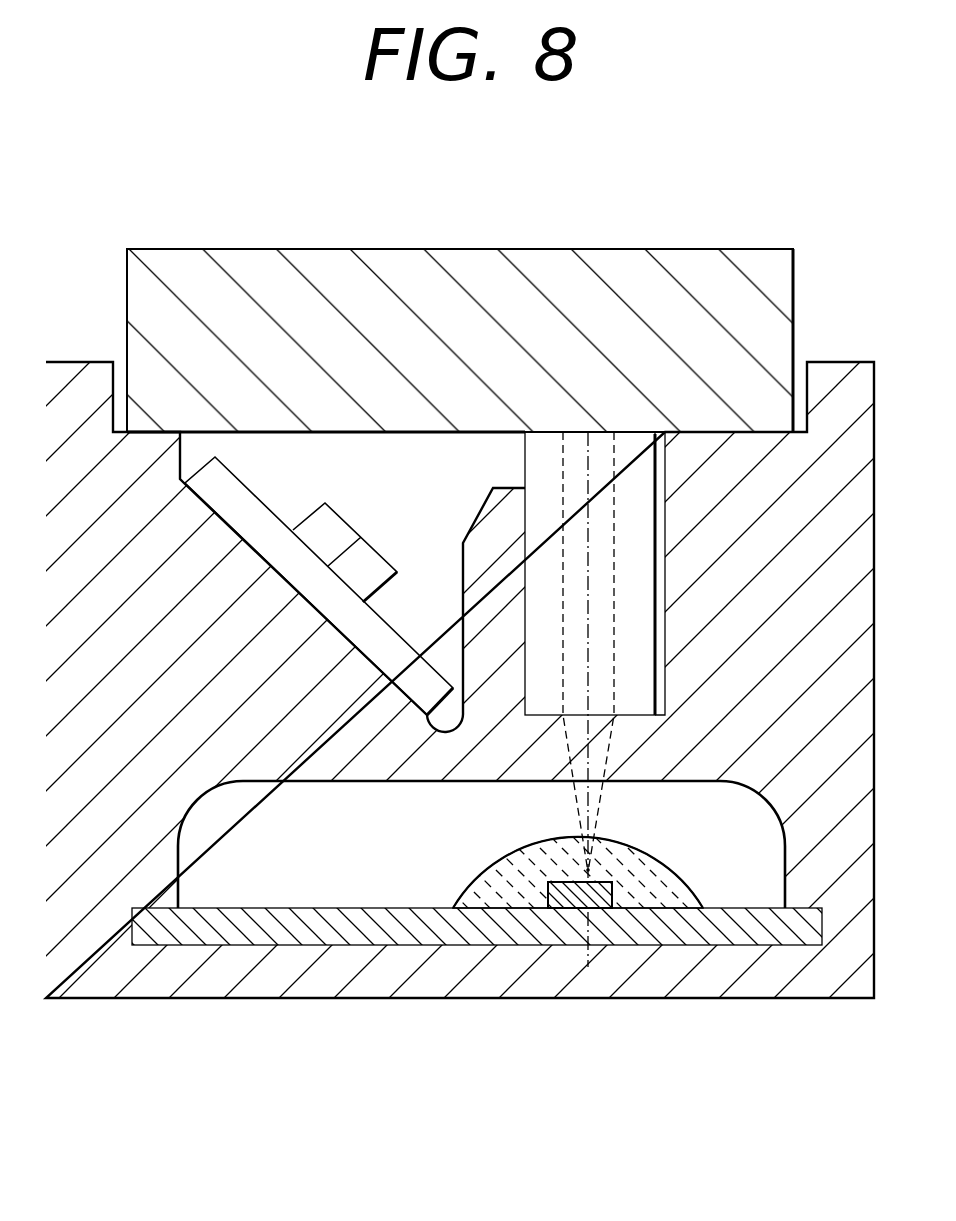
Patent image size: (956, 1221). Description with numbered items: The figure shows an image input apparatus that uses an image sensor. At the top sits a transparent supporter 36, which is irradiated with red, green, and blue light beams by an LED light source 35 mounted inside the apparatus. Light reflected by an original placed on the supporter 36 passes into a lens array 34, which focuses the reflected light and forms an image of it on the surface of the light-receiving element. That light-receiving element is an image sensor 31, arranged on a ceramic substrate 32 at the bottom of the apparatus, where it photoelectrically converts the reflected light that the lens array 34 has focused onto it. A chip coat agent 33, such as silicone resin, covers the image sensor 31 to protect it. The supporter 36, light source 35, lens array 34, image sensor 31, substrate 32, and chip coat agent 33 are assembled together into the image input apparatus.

The image sensor 31 is at (558, 893).
The ceramic substrate 32 is at (283, 917).
The chip coat agent 33 is at (670, 885).
The lens array 34 is at (535, 467).
The LED light source 35 is at (332, 527).
The transparent supporter 36 is at (776, 295).